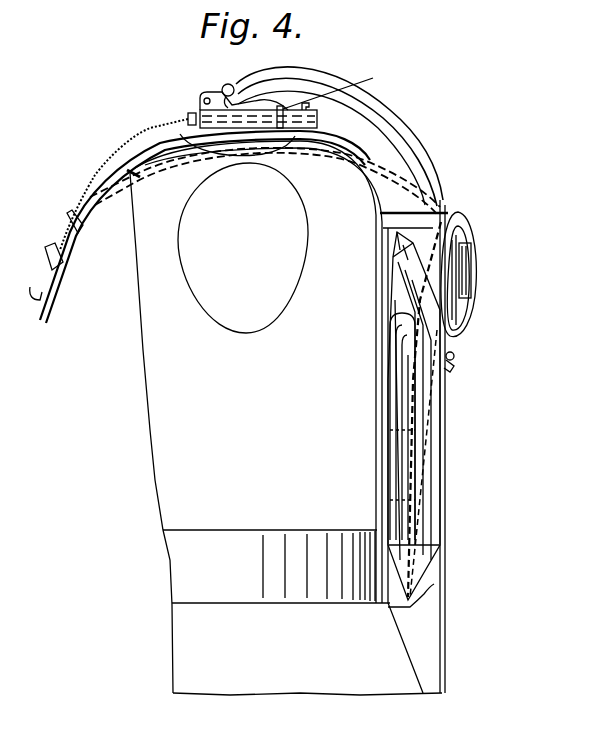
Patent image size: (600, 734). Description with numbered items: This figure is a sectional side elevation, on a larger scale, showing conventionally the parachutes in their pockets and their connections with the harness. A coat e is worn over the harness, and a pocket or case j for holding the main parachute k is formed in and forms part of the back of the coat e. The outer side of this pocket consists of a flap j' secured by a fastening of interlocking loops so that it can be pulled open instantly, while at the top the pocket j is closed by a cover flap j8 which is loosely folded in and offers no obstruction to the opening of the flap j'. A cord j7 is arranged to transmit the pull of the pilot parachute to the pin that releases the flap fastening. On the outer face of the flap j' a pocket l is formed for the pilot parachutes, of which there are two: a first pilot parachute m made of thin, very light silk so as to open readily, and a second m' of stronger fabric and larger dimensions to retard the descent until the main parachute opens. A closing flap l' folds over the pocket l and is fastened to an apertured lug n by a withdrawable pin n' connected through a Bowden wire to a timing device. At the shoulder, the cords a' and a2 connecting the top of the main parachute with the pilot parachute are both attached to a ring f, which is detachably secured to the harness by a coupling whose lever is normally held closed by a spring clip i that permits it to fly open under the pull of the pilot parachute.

The coat e is at (286, 414).
The cord a' is at (240, 357).
The cord a2 is at (339, 123).
The ring f is at (226, 88).
The spring clip i is at (333, 84).
The cord j7 is at (390, 118).
The cover flap j8 is at (428, 210).
The pilot parachute m is at (489, 259).
The pilot parachute m' is at (483, 280).
The pocket l is at (473, 274).
The closing flap l' is at (477, 283).
The apertured lug n is at (466, 349).
The withdrawable pin n' is at (467, 372).
The flap j' is at (433, 426).
The main parachute k is at (440, 518).
The pocket j is at (427, 585).